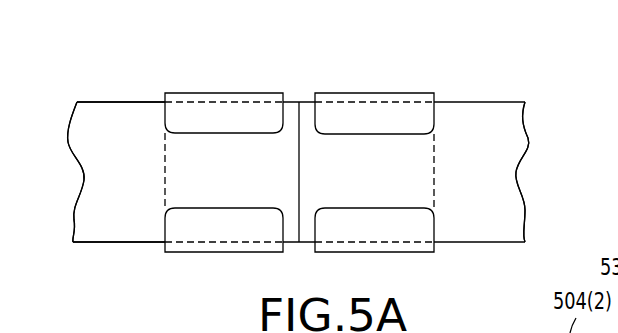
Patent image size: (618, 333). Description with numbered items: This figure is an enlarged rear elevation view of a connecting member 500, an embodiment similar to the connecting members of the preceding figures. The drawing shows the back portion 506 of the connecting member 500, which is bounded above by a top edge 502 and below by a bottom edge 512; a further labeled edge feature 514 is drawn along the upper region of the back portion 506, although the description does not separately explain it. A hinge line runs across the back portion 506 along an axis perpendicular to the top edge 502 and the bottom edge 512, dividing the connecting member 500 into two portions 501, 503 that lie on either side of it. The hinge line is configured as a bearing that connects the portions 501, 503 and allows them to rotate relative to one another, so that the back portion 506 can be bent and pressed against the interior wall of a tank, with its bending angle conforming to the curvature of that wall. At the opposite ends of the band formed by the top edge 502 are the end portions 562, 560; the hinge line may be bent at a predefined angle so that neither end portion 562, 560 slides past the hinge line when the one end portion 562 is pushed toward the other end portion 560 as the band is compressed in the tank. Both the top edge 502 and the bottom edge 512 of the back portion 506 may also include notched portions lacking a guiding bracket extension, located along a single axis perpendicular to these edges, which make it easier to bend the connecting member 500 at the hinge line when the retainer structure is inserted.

The connecting member 500 is at (485, 165).
The portion of the connecting member 501 is at (248, 150).
The top edge 502 is at (119, 122).
The portion of the connecting member 503 is at (400, 152).
The back portion 506 is at (298, 132).
The bottom edge 512 is at (212, 252).
The upper edge 514 is at (196, 93).
The end portion 560 is at (494, 213).
The end portion 562 is at (107, 212).